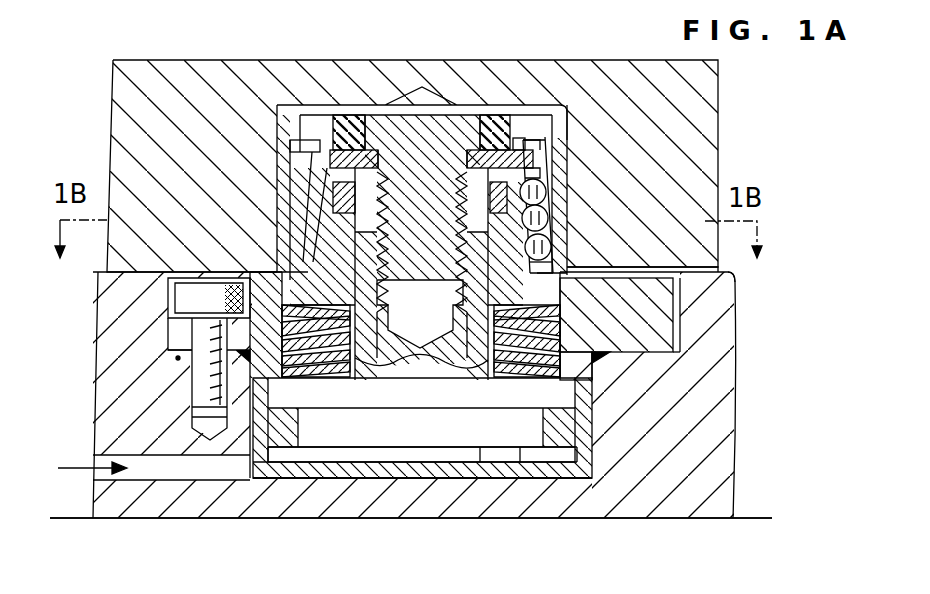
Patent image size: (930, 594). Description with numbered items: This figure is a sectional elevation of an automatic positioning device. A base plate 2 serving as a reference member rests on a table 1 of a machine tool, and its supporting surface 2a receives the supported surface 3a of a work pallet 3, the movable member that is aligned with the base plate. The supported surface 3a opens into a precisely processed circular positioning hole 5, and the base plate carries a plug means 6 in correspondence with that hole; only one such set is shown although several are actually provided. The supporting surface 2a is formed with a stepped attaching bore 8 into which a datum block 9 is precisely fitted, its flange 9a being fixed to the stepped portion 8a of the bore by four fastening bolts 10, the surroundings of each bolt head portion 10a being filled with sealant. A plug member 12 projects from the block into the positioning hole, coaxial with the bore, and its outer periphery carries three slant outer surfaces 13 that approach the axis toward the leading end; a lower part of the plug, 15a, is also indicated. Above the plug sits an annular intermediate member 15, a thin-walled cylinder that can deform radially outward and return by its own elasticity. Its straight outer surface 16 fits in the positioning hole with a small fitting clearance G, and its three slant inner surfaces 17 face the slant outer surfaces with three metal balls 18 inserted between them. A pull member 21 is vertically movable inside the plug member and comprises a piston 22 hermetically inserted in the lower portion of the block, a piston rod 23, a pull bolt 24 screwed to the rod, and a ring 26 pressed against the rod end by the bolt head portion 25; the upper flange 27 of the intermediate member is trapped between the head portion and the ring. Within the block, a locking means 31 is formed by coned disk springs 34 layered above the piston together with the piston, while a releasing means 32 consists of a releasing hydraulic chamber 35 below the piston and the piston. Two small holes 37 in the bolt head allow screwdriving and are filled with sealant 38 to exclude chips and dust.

The table 1 is at (756, 519).
The base plate 2 is at (718, 410).
The supporting surface 2a is at (735, 277).
The work pallet 3 is at (718, 119).
The supported surface 3a is at (682, 322).
The positioning hole 5 is at (570, 108).
The plug means 6 is at (676, 343).
The attaching bore 8 is at (168, 347).
The stepped portion 8a is at (176, 359).
The datum block 9 is at (712, 366).
The flange 9a is at (168, 326).
The fastening bolt 10 is at (192, 388).
The head portion 10a is at (192, 288).
The plug member 12 is at (305, 215).
The slant outer surface 13 is at (490, 270).
The intermediate member 15 is at (566, 212).
The guide arm 15a is at (292, 219).
The straight outer surface 16 is at (550, 248).
The slant inner surface 17 is at (572, 145).
The ball 18 is at (556, 172).
The fitting clearance G is at (572, 181).
The pull member 21 is at (368, 463).
The piston 22 is at (437, 462).
The piston rod 23 is at (398, 358).
The pull bolt 24 is at (437, 110).
The head portion 25 is at (550, 110).
The ring 26 is at (308, 147).
The upper flange 27 is at (281, 108).
The locking means 31 is at (629, 386).
The releasing means 32 is at (442, 519).
The coned disk spring 34 is at (624, 336).
The releasing hydraulic chamber 35 is at (527, 470).
The small hole 37 is at (322, 150).
The sealant 38 is at (350, 125).